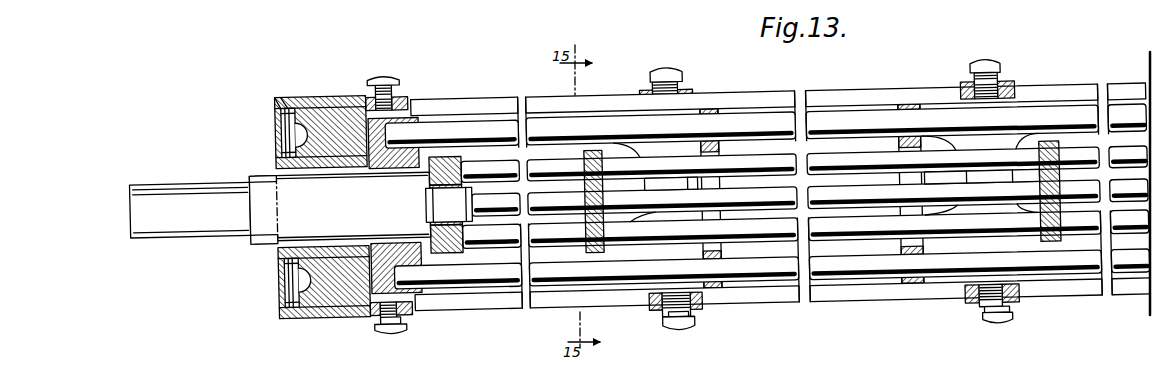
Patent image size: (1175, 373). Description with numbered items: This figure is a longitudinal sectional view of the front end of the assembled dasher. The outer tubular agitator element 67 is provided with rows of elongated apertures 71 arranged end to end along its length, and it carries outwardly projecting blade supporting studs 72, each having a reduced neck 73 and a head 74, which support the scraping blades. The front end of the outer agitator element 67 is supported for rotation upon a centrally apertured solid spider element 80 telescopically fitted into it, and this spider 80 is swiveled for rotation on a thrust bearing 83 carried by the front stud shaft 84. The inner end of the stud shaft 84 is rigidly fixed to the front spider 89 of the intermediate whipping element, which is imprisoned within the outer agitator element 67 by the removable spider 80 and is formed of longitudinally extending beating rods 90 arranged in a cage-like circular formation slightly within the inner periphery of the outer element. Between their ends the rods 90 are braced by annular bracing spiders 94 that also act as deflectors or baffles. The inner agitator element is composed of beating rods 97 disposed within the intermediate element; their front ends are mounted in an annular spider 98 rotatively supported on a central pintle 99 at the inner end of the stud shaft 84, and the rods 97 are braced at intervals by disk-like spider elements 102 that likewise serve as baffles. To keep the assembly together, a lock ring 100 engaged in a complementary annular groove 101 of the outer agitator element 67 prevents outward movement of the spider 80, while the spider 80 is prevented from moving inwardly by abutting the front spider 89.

The outer tubular agitator element 67 is at (332, 95).
The elongated apertures 71 is at (1072, 131).
The blade supporting studs 72 is at (398, 89).
The reduced neck 73 is at (398, 326).
The head 74 is at (387, 339).
The spider element 80 is at (334, 303).
The thrust bearing 83 is at (270, 240).
The front stud shaft 84 is at (256, 180).
The front spider 89 is at (397, 141).
The beating rods 90 is at (459, 127).
The annular bracing spiders 94 is at (721, 289).
The beating rods 97 is at (661, 243).
The annular spider 98 is at (450, 255).
The central pintle 99 is at (437, 203).
The lock ring 100 is at (290, 131).
The annular groove 101 is at (290, 97).
The disk-like spider elements 102 is at (586, 222).